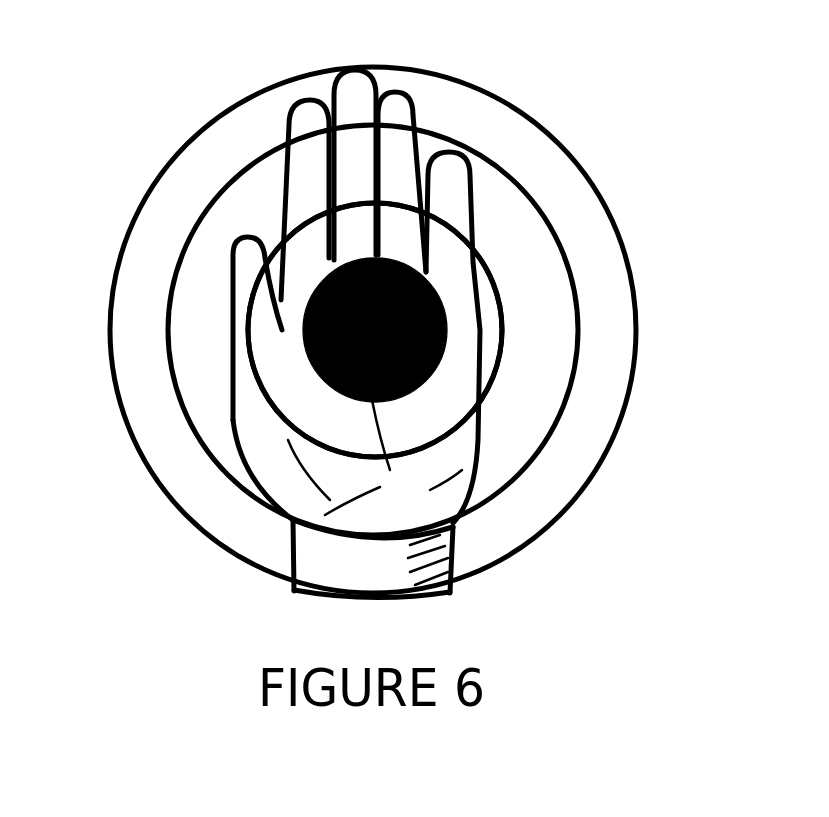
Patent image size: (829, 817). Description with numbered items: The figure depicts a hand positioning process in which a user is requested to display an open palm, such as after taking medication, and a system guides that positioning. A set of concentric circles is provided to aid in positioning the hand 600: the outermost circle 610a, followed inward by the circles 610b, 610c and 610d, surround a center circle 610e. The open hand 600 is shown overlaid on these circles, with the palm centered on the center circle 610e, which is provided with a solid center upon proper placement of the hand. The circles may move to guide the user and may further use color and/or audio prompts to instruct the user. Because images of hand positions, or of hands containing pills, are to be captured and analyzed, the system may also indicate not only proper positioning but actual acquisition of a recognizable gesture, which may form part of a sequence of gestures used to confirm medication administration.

The hand 600 is at (312, 110).
The concentric circle 610a is at (450, 75).
The concentric circle 610b is at (465, 143).
The concentric circle 610c is at (468, 235).
The concentric circle 610d is at (502, 303).
The center circle 610e is at (305, 292).